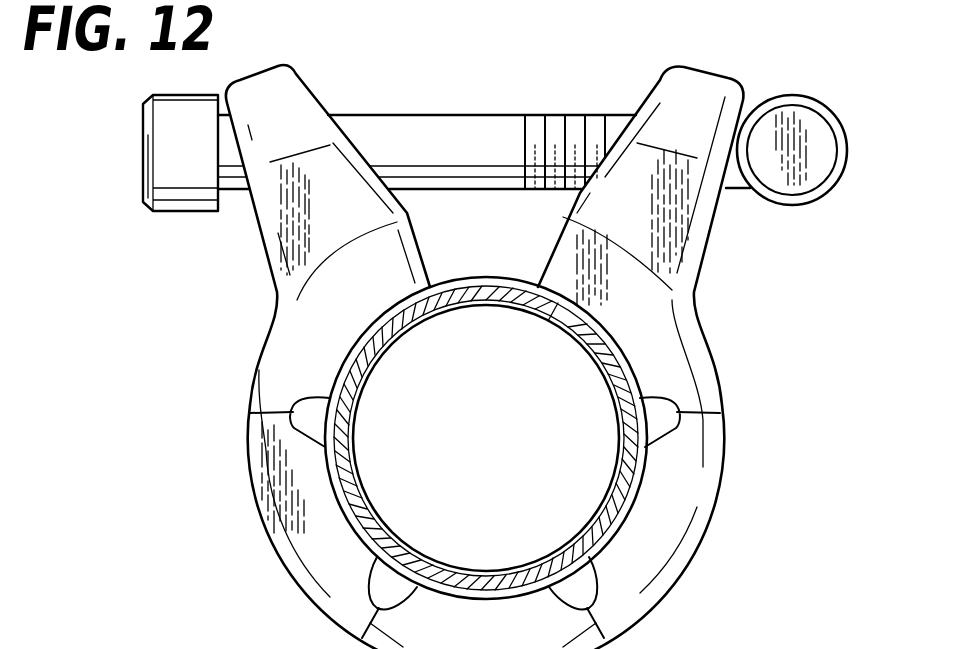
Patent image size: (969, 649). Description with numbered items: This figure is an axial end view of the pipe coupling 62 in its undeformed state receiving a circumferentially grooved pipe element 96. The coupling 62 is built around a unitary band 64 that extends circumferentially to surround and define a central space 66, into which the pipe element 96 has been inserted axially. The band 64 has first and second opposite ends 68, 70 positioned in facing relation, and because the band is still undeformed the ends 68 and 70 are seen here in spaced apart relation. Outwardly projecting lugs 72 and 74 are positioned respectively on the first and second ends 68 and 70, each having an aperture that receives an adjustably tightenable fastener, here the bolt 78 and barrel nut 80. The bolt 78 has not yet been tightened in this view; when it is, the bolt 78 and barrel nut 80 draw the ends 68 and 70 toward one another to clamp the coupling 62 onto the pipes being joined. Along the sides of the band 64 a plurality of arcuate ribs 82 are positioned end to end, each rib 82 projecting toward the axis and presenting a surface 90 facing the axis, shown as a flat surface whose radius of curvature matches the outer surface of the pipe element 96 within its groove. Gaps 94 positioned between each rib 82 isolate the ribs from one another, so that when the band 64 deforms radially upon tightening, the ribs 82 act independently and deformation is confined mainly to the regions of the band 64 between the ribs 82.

The coupling 62 is at (717, 356).
The unitary band 64 is at (707, 532).
The central space 66 is at (501, 488).
The first end 68 is at (427, 250).
The second end 70 is at (548, 240).
The lug 72 is at (288, 81).
The lug 74 is at (665, 110).
The bolt 78 is at (436, 125).
The barrel nut 80 is at (767, 173).
The arcuate rib 82 is at (342, 547).
The surface 90 is at (553, 307).
The gap 94 is at (312, 422).
The pipe element 96 is at (587, 355).